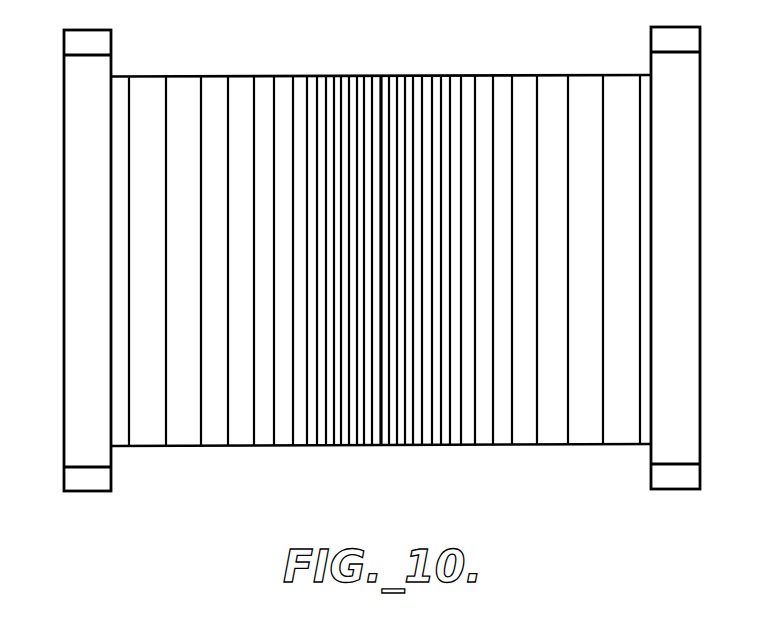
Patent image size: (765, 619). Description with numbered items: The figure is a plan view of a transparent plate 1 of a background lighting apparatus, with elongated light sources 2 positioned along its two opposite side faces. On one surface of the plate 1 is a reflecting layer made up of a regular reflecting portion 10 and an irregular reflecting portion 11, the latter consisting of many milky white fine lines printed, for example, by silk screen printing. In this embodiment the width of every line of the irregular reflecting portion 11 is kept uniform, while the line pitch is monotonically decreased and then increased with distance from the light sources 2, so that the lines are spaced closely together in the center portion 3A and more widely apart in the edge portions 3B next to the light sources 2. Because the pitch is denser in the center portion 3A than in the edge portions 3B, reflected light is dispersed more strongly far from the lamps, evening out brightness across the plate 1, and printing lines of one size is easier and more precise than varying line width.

The transparent plate 1 is at (181, 75).
The light sources 2 is at (72, 233).
The regular reflecting portion 10 is at (485, 90).
The irregular reflecting portion 11 is at (569, 87).
The center portion 3A is at (381, 446).
The edge portions 3B is at (153, 447).